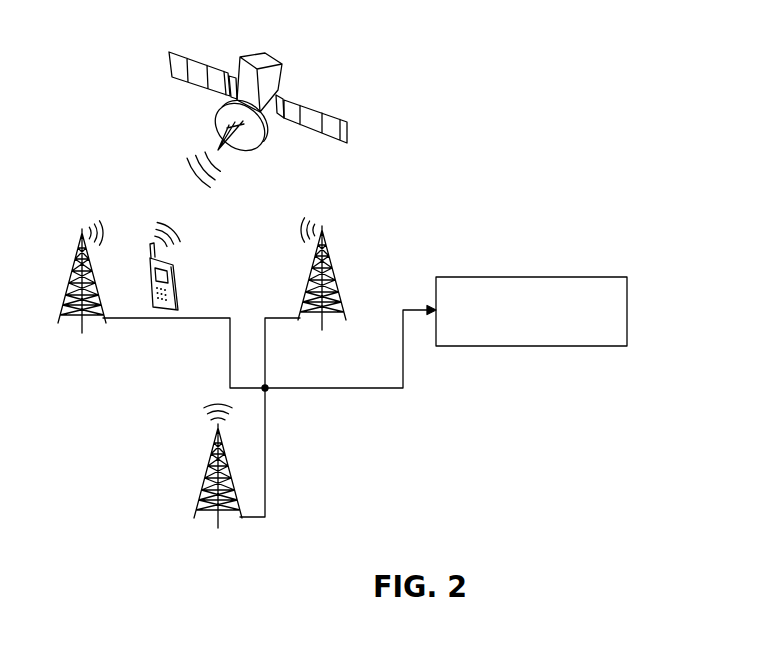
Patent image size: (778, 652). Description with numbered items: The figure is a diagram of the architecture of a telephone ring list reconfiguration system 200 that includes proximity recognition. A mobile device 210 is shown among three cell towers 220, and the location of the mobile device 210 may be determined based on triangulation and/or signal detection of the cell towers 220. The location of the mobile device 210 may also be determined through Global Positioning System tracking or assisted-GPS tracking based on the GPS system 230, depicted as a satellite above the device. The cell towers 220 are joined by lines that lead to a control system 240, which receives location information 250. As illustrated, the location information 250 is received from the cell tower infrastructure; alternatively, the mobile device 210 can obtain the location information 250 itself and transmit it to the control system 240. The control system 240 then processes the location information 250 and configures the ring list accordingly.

The telephone ring list reconfiguration system 200 is at (726, 38).
The mobile device 210 is at (180, 278).
The cell towers 220 is at (75, 263).
The GPS system 230 is at (265, 143).
The control system 240 is at (535, 277).
The location information 250 is at (363, 452).